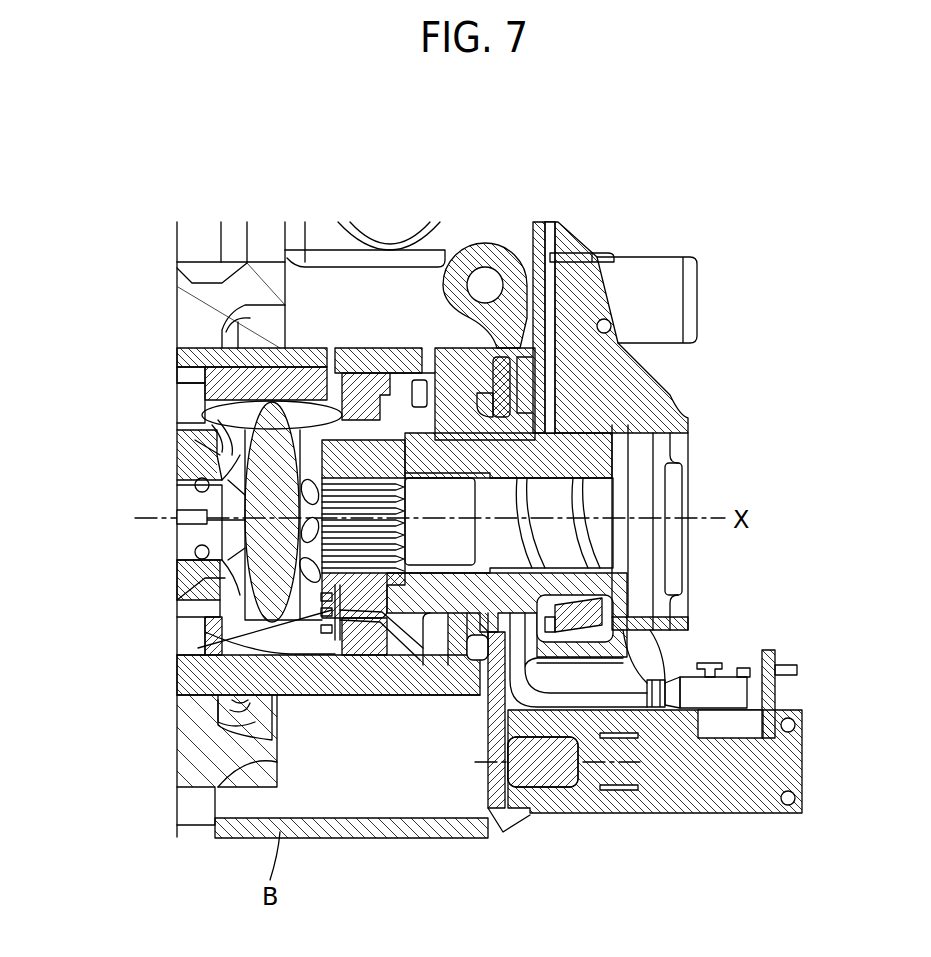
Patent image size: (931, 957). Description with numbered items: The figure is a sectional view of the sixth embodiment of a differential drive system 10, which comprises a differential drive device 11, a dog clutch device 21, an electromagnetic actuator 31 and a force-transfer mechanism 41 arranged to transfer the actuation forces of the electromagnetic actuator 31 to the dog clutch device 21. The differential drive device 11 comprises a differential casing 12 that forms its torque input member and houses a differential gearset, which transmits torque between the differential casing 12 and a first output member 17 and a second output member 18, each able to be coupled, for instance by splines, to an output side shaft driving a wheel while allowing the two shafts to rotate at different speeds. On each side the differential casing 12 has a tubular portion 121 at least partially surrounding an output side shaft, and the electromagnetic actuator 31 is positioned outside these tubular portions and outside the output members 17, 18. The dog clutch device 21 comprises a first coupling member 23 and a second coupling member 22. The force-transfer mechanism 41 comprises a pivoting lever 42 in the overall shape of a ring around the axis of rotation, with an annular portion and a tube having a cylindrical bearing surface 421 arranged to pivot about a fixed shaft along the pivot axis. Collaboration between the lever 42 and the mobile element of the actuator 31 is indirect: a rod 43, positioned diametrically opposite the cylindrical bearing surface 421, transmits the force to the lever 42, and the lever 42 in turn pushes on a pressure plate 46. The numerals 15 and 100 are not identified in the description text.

The differential drive system 10 is at (268, 222).
The differential drive device 11 is at (178, 350).
The differential casing 12 is at (348, 695).
The shaft 15 is at (398, 695).
The first output member 17 is at (178, 648).
The second output member 18 is at (183, 578).
The dog clutch device 21 is at (332, 697).
The second coupling member 22 is at (372, 375).
The first coupling member 23 is at (305, 372).
The electromagnetic actuator 31 is at (670, 824).
The force-transfer mechanism 41 is at (481, 798).
The pivoting lever 42 is at (545, 345).
The rod 43 is at (545, 770).
The pressure plate 46 is at (452, 695).
The hole 100 is at (485, 282).
The tubular portion 121 is at (607, 463).
The cylindrical bearing surface 421 is at (507, 268).